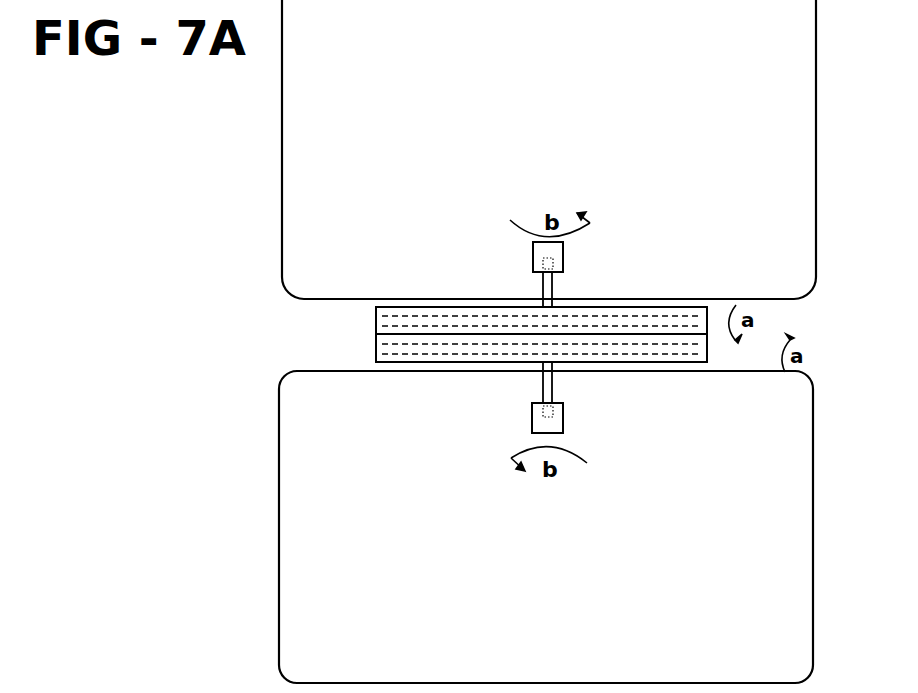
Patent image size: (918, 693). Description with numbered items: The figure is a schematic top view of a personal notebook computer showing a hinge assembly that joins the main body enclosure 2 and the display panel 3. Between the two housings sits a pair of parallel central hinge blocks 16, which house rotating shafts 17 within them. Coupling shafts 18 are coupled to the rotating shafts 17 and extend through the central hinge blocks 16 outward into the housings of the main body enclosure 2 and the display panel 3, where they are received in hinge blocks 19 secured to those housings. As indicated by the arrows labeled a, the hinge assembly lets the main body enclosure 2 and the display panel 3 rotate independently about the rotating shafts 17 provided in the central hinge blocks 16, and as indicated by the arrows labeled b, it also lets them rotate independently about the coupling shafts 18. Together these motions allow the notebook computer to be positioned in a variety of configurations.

The main body enclosure 2 is at (280, 470).
The display panel 3 is at (283, 150).
The central hinge blocks 16 is at (376, 323).
The rotating shafts 17 is at (418, 318).
The coupling shafts 18 is at (543, 303).
The hinge blocks 19 is at (533, 262).